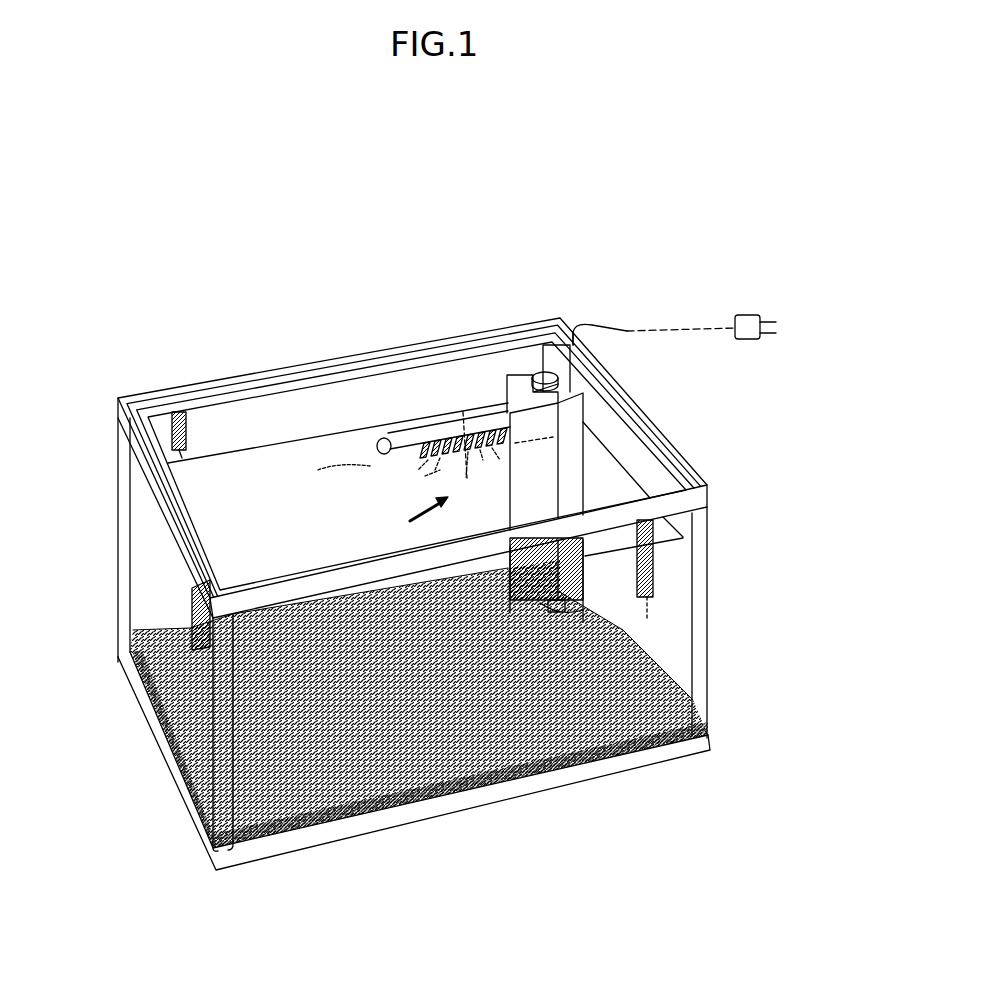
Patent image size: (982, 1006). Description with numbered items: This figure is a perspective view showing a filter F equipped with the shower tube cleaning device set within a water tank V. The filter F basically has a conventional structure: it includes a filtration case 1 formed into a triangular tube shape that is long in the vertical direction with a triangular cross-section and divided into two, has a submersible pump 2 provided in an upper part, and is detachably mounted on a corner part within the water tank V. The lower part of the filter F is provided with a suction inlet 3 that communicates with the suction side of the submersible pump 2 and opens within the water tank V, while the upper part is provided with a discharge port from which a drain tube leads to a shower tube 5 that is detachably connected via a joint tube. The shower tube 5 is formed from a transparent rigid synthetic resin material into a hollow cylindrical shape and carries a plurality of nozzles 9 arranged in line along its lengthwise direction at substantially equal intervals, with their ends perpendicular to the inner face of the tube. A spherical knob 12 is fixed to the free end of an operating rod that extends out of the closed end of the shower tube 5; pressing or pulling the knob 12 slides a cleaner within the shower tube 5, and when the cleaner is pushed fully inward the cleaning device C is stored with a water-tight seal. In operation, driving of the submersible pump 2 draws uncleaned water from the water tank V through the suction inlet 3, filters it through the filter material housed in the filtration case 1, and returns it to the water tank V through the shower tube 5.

The water tank V is at (497, 316).
The filter F is at (580, 485).
The filtration case 1 is at (524, 491).
The suction inlet 3 is at (568, 578).
The shower tube 5 is at (422, 440).
The knob 12 is at (382, 438).
The nozzles 9 is at (450, 452).
The cleaning device C is at (463, 410).
The submersible pump 2 is at (414, 523).